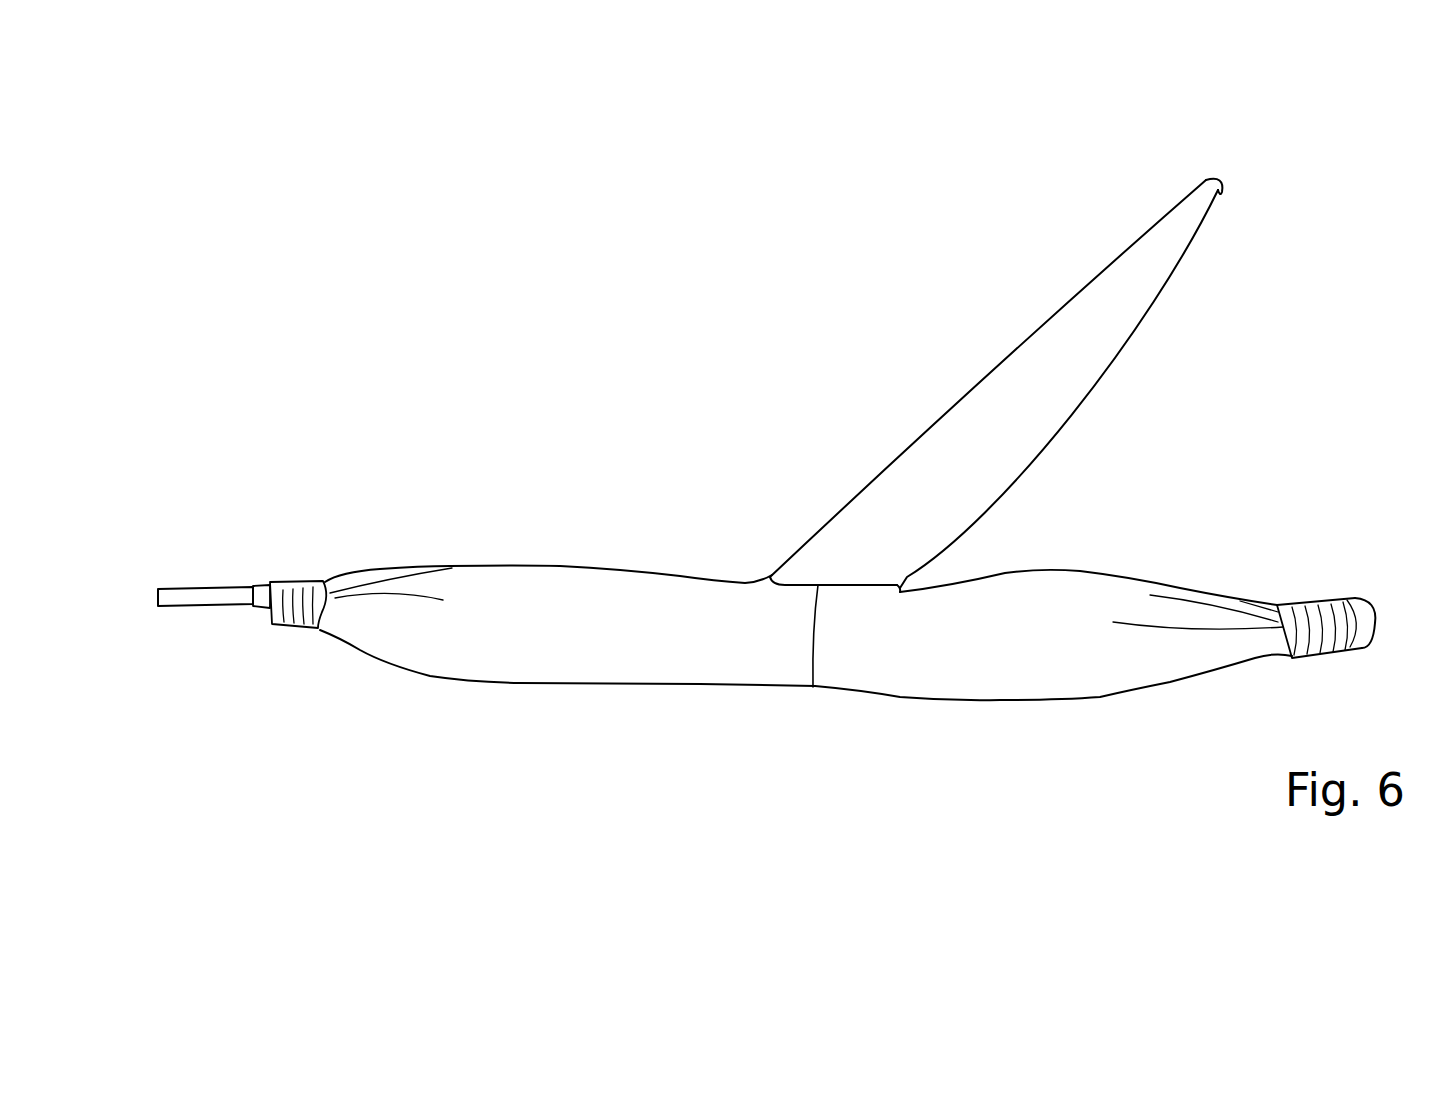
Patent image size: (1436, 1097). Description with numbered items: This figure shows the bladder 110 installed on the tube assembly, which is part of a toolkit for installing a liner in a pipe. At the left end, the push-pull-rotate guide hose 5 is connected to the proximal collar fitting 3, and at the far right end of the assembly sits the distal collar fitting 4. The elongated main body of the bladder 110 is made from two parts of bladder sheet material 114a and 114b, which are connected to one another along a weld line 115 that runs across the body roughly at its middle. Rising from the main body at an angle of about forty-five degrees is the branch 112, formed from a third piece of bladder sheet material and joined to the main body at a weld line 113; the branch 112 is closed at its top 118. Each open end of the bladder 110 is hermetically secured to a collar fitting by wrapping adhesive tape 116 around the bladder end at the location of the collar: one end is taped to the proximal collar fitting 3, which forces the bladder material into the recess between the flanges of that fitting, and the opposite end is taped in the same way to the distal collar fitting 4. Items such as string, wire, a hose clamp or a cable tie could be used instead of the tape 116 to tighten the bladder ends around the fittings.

The bladder 110 is at (612, 597).
The branch 112 is at (993, 398).
The weld line 113 is at (798, 583).
The bladder sheet material 114a is at (552, 617).
The bladder sheet material 114b is at (1018, 618).
The weld line 115 is at (813, 683).
The adhesive tape 116 is at (303, 598).
The top 118 is at (1207, 178).
The proximal collar fitting 3 is at (272, 585).
The distal collar fitting 4 is at (1363, 601).
The push-pull-rotate guide hose 5 is at (222, 589).